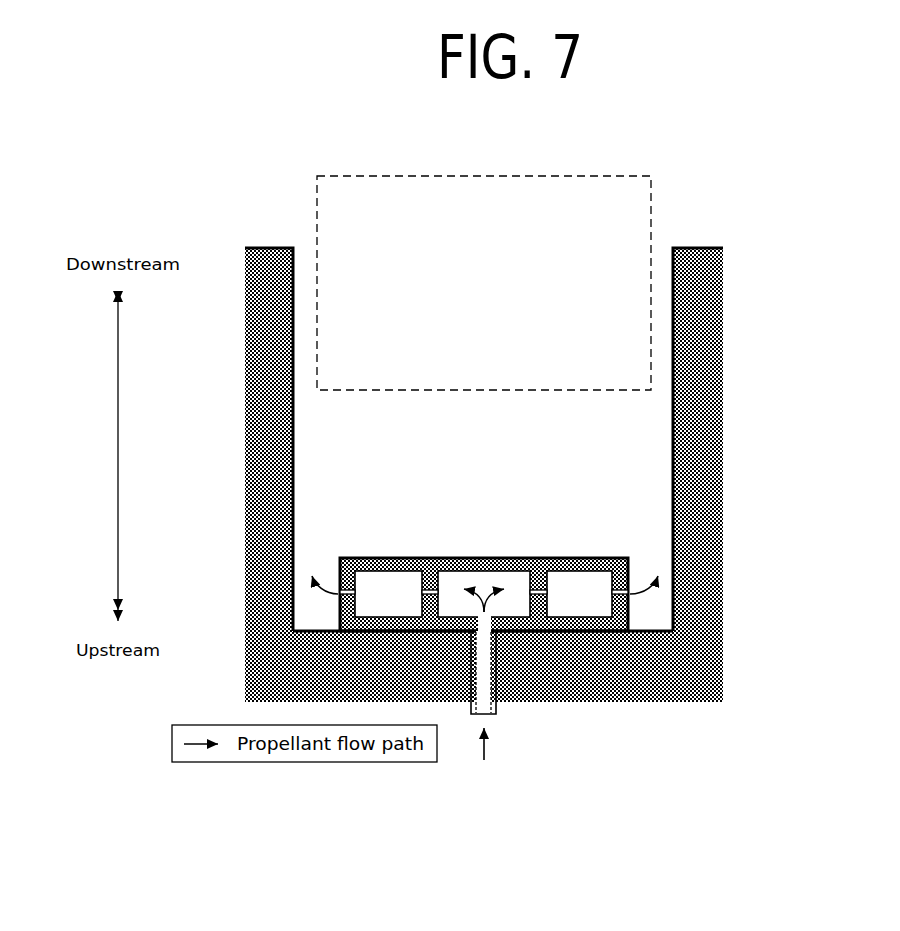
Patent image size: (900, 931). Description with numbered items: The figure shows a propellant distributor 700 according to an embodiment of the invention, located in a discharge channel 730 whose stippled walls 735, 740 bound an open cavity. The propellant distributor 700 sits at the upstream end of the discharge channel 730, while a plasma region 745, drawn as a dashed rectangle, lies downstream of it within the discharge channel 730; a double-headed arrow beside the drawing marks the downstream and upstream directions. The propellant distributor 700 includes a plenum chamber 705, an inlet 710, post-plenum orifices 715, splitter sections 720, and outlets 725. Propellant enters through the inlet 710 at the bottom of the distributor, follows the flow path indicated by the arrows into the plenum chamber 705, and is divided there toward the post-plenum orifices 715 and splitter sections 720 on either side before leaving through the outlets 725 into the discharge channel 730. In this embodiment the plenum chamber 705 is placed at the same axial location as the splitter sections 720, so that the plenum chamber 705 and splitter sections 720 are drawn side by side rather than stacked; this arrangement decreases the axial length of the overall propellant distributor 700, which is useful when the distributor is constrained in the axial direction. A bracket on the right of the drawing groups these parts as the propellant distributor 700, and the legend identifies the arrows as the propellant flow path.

The propellant distributor 700 is at (530, 585).
The plenum chamber 705 is at (444, 580).
The inlet 710 is at (505, 722).
The post-plenum orifices 715 is at (552, 584).
The splitter sections 720 is at (386, 609).
The outlets 725 is at (687, 624).
The discharge channel 730 is at (480, 439).
The inner channel wall 735 is at (241, 257).
The outer channel wall 740 is at (720, 272).
The plasma region 745 is at (484, 283).